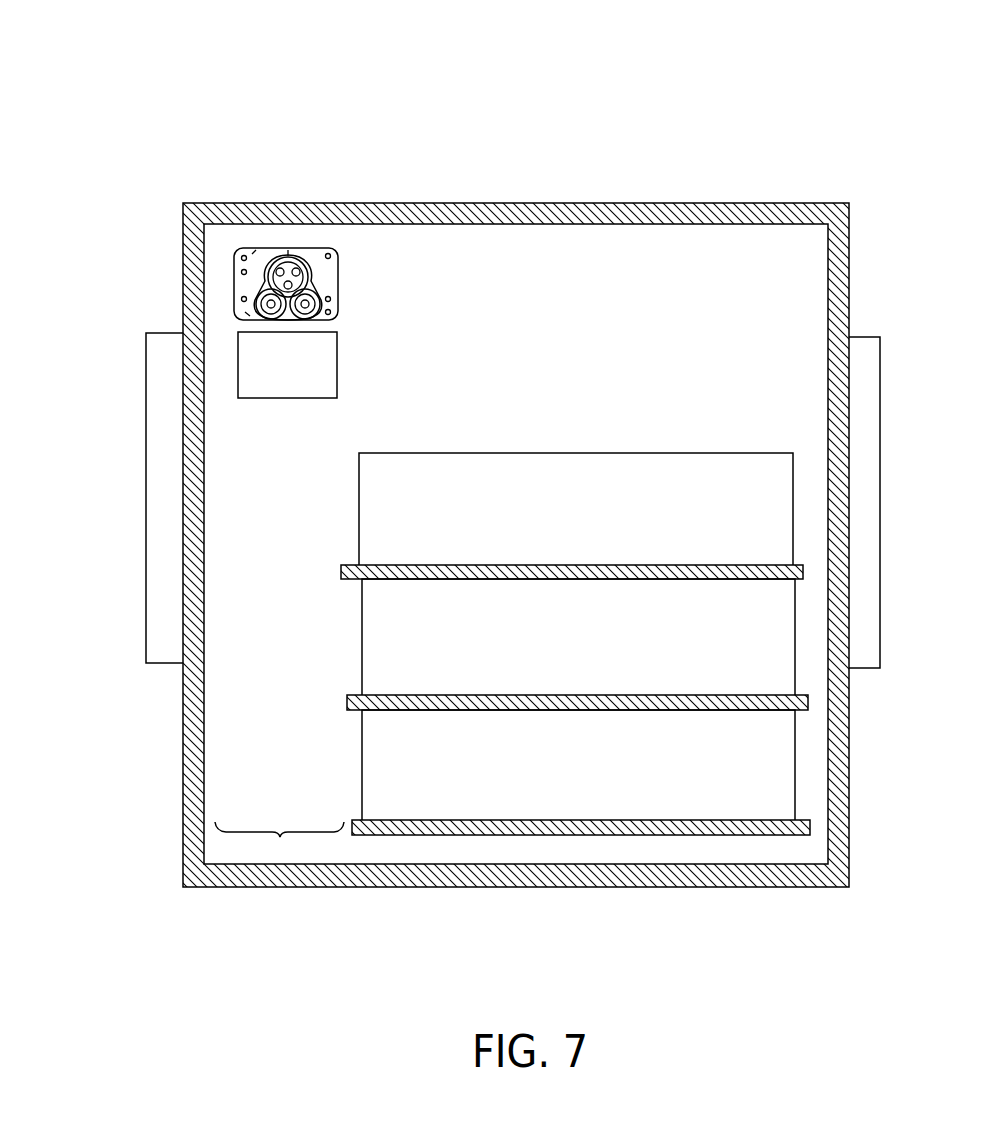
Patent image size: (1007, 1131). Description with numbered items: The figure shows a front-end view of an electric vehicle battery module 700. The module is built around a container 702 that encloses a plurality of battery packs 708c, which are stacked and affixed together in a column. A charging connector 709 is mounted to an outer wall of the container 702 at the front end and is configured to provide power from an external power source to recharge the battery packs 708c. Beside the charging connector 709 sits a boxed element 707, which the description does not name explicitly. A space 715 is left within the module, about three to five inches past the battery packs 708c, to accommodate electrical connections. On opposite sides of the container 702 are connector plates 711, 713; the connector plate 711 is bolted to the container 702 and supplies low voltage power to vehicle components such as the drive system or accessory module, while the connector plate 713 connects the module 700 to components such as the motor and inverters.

The electric vehicle battery module 700 is at (124, 60).
The container 702 is at (473, 203).
The control unit 707 is at (267, 377).
The charging connector 709 is at (338, 283).
The connector plate 711 is at (147, 503).
The connector plate 713 is at (863, 490).
The battery pack 708c is at (547, 525).
The space 715 is at (279, 844).